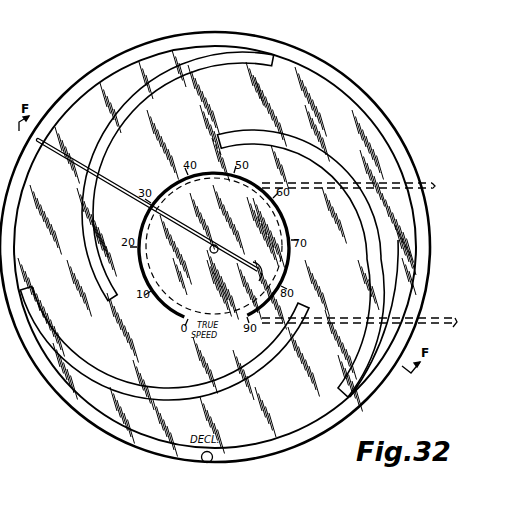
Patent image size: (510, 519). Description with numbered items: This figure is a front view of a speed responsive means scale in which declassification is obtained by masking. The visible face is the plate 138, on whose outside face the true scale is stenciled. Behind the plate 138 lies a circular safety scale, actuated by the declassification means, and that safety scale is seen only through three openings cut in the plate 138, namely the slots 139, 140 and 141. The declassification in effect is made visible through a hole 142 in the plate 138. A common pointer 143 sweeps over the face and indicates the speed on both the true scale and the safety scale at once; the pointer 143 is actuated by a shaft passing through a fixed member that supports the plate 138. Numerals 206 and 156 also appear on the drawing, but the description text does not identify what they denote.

The plate 138 is at (358, 87).
The slot 139 is at (254, 50).
The slot 140 is at (383, 293).
The slot 141 is at (93, 378).
The hole 142 is at (196, 461).
The common pointer 143 is at (58, 143).
The dashed guide lines 206 is at (453, 327).
The lead line of adjacent figure 156 is at (374, 518).